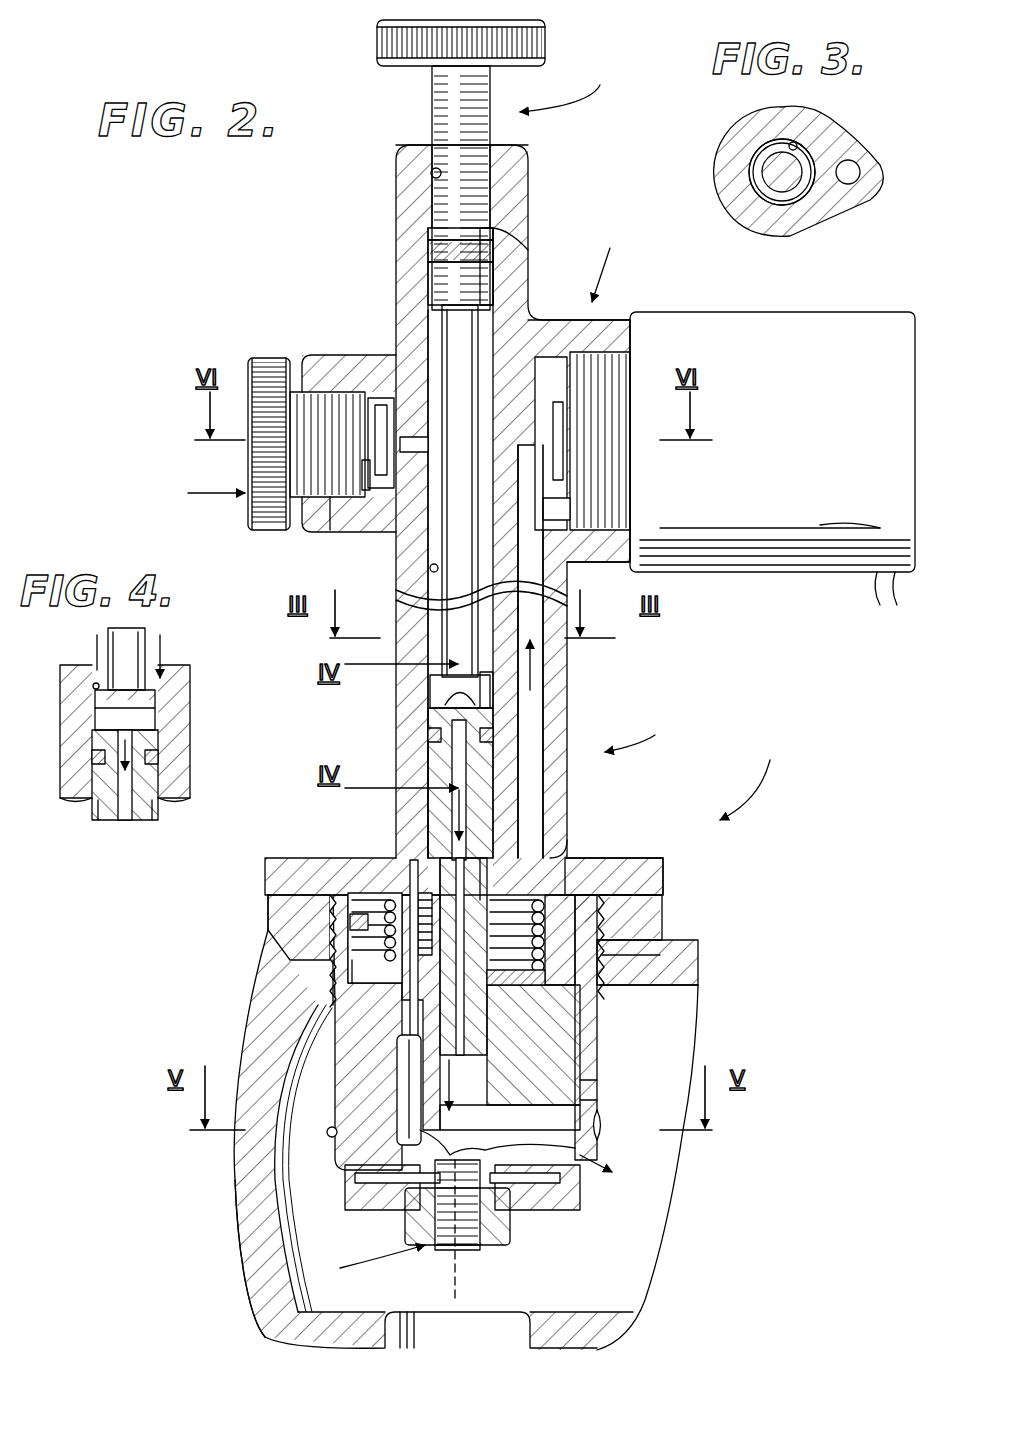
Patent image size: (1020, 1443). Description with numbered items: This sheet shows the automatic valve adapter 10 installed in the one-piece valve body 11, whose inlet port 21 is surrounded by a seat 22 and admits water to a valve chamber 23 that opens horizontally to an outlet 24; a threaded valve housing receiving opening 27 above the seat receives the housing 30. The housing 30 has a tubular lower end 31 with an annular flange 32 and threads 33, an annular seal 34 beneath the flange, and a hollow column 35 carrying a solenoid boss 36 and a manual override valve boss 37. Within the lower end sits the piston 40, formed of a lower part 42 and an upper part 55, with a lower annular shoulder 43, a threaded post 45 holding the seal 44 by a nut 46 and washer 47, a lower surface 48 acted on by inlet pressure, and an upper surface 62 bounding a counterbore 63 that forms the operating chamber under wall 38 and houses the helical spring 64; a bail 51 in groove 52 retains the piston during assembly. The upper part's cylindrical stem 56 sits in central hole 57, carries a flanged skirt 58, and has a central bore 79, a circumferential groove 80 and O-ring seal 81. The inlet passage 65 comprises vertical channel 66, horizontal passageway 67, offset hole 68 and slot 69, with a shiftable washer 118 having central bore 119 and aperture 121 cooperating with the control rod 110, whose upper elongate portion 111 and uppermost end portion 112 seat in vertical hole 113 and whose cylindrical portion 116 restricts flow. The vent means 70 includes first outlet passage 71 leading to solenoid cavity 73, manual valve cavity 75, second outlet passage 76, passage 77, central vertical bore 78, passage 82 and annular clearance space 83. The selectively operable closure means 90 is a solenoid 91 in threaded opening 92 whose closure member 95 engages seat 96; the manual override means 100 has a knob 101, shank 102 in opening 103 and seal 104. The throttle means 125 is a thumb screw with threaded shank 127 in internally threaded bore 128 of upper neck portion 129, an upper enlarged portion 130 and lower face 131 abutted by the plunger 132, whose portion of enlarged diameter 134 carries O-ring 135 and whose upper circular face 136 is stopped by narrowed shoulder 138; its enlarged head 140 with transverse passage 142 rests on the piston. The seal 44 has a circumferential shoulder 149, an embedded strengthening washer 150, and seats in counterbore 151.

In FIG. 2, the automatic valve adapter 10 is at (757, 779).
In FIG. 2, the valve body 11 is at (225, 1215).
In FIG. 2, the inlet port 21 is at (449, 1330).
In FIG. 2, the seat 22 is at (535, 1312).
In FIG. 2, the valve chamber 23 is at (290, 1292).
In FIG. 2, the outlet 24 is at (672, 990).
In FIG. 2, the threaded valve housing receiving opening 27 is at (328, 945).
In FIG. 2, the housing 30 is at (641, 727).
In FIG. 2, the tubular lower end 31 is at (597, 1048).
In FIG. 2, the annular flange 32 is at (655, 868).
In FIG. 2, the threads 33 is at (605, 985).
In FIG. 2, the annular seal 34 is at (665, 910).
In FIG. 2, the hollow column 35 is at (545, 778).
In FIG. 3, the hollow column 35 is at (770, 226).
In FIG. 4, the hollow column 35 is at (68, 720).
In FIG. 2, the solenoid boss 36 is at (612, 322).
In FIG. 2, the manual override valve boss 37 is at (330, 355).
In FIG. 2, the wall 38 is at (570, 855).
In FIG. 2, the piston 40 is at (345, 915).
In FIG. 2, the lower part 42 is at (533, 1045).
In FIG. 2, the lower annular shoulder 43 is at (340, 1172).
In FIG. 2, the seal 44 is at (600, 1220).
In FIG. 2, the threaded post 45 is at (470, 1248).
In FIG. 2, the nut 46 is at (510, 1232).
In FIG. 2, the washer 47 is at (435, 1215).
In FIG. 2, the lower surface 48 is at (345, 1230).
In FIG. 2, the bail 51 is at (325, 1133).
In FIG. 2, the circumferential groove 52 is at (600, 1132).
In FIG. 2, the upper part 55 is at (425, 748).
In FIG. 4, the upper part 55 is at (95, 815).
In FIG. 2, the cylindrical stem 56 is at (440, 822).
In FIG. 4, the cylindrical stem 56 is at (158, 815).
In FIG. 2, the central hole 57 is at (478, 1080).
In FIG. 2, the flanged skirt 58 is at (510, 978).
In FIG. 2, the upper surface 62 is at (580, 860).
In FIG. 2, the counterbore 63 is at (590, 950).
In FIG. 2, the helical spring 64 is at (340, 975).
In FIG. 2, the inlet passage 65 is at (365, 1260).
In FIG. 2, the vertical channel 66 is at (448, 1320).
In FIG. 2, the horizontal passageway 67 is at (450, 1128).
In FIG. 2, the hole 68 is at (400, 1050).
In FIG. 2, the slot 69 is at (375, 952).
In FIG. 2, the vent means 70 is at (612, 266).
In FIG. 2, the first outlet passage 71 is at (548, 652).
In FIG. 3, the first outlet passage 71 is at (852, 165).
In FIG. 2, the solenoid cavity 73 is at (560, 530).
In FIG. 2, the manual valve cavity 75 is at (380, 495).
In FIG. 2, the second outlet passage 76 is at (508, 430).
In FIG. 2, the passage 77 is at (438, 440).
In FIG. 2, the central vertical bore 78 is at (425, 588).
In FIG. 3, the central vertical bore 78 is at (797, 142).
In FIG. 4, the central vertical bore 78 is at (92, 686).
In FIG. 2, the central bore 79 is at (468, 812).
In FIG. 4, the central bore 79 is at (120, 820).
In FIG. 2, the circumferential groove 80 is at (428, 735).
In FIG. 4, the circumferential groove 80 is at (92, 758).
In FIG. 2, the O-ring seal 81 is at (493, 735).
In FIG. 4, the O-ring seal 81 is at (158, 755).
In FIG. 2, the passage 82 is at (582, 1078).
In FIG. 2, the annular clearance space 83 is at (582, 1102).
In FIG. 2, the selectively operable closure means 90 is at (830, 312).
In FIG. 2, the solenoid 91 is at (800, 528).
In FIG. 2, the threaded opening 92 is at (605, 522).
In FIG. 2, the closure member 95 is at (556, 400).
In FIG. 2, the seat 96 is at (560, 470).
In FIG. 2, the manual override means 100 is at (187, 481).
In FIG. 2, the knob 101 is at (265, 360).
In FIG. 2, the shank 102 is at (320, 497).
In FIG. 2, the opening 103 is at (335, 500).
In FIG. 2, the seal 104 is at (380, 405).
In FIG. 2, the control rod 110 is at (395, 1080).
In FIG. 2, the upper elongate portion 111 is at (350, 1020).
In FIG. 2, the uppermost end portion 112 is at (430, 845).
In FIG. 2, the vertical hole 113 is at (480, 872).
In FIG. 2, the cylindrical portion 116 is at (397, 1100).
In FIG. 2, the washer 118 is at (612, 980).
In FIG. 2, the central bore 119 is at (480, 992).
In FIG. 2, the aperture 121 is at (360, 1000).
In FIG. 2, the throttle means 125 is at (571, 86).
In FIG. 2, the threaded shank 127 is at (440, 88).
In FIG. 2, the internally threaded bore 128 is at (432, 180).
In FIG. 2, the upper neck portion 129 is at (520, 158).
In FIG. 2, the upper enlarged portion 130 is at (545, 35).
In FIG. 2, the lower face 131 is at (440, 248).
In FIG. 2, the plunger 132 is at (440, 325).
In FIG. 3, the plunger 132 is at (760, 172).
In FIG. 4, the plunger 132 is at (150, 625).
In FIG. 2, the portion of enlarged diameter 134 is at (438, 272).
In FIG. 2, the O-ring 135 is at (492, 258).
In FIG. 2, the upper circular face 136 is at (445, 236).
In FIG. 2, the narrowed shoulder 138 is at (505, 222).
In FIG. 2, the enlarged head 140 is at (490, 685).
In FIG. 3, the enlarged head 140 is at (762, 190).
In FIG. 2, the transverse passage 142 is at (480, 708).
In FIG. 4, the transverse passage 142 is at (145, 720).
In FIG. 2, the circumferential shoulder 149 is at (360, 1185).
In FIG. 2, the strengthening washer 150 is at (600, 1180).
In FIG. 2, the counterbore 151 is at (580, 1200).